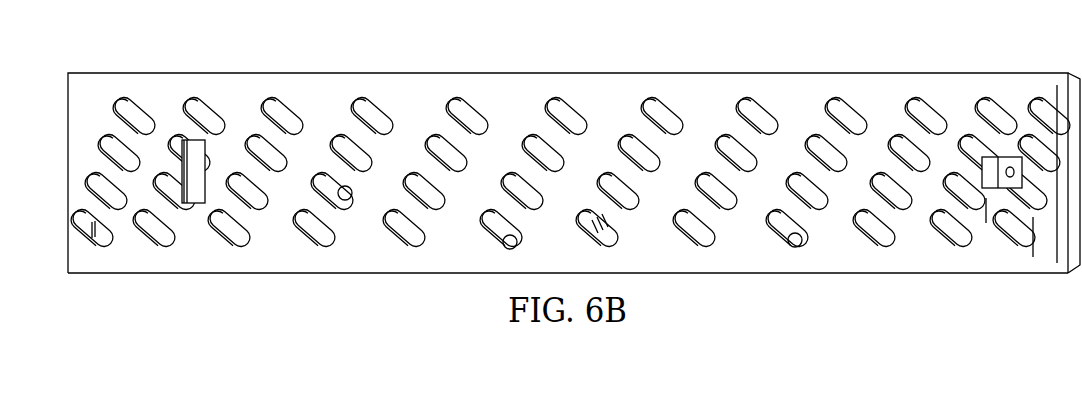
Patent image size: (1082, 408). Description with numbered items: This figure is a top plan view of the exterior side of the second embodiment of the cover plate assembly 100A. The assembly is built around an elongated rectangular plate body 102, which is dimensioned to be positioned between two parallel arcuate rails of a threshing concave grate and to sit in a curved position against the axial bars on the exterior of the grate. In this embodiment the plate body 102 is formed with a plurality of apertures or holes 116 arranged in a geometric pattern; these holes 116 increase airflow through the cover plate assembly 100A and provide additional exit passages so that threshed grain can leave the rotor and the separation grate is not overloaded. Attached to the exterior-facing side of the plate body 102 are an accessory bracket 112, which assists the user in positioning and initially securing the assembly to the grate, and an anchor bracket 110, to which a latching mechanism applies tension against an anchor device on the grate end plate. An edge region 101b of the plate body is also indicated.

The cover plate assembly 100A is at (650, 44).
The plate body 102 is at (327, 72).
The second edge of panel 101b is at (833, 256).
The anchor bracket 110 is at (1008, 156).
The accessory bracket 112 is at (198, 147).
The apertures or holes 116 is at (346, 200).